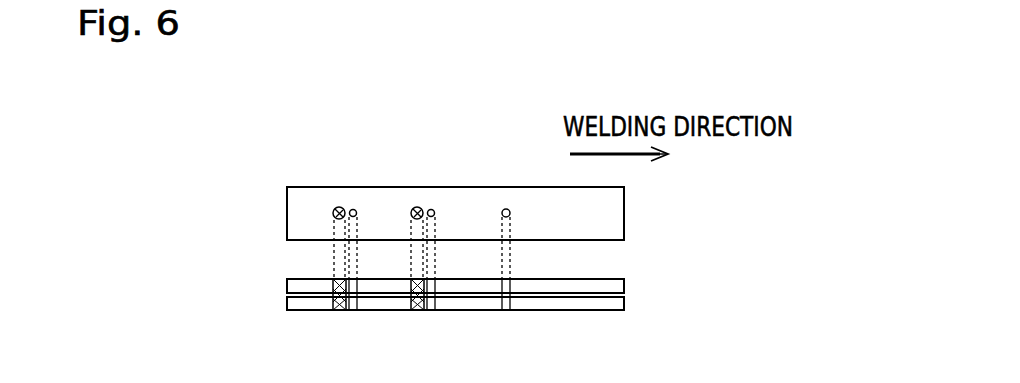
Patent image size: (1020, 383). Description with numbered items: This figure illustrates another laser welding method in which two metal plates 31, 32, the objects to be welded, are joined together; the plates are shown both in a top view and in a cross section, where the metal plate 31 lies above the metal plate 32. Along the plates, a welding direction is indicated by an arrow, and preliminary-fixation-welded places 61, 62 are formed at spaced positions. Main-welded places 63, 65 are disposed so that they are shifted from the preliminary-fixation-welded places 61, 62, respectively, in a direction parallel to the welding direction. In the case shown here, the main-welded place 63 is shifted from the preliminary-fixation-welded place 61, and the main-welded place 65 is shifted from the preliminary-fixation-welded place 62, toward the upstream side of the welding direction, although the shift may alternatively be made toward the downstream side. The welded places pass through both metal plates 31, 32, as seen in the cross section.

The metal plate 31 is at (624, 212).
The metal plate 32 is at (617, 310).
The preliminary-fixation-welded place 61 is at (355, 209).
The preliminary-fixation-welded place 62 is at (433, 209).
The main-welded place 63 is at (335, 208).
The main-welded place 65 is at (413, 208).